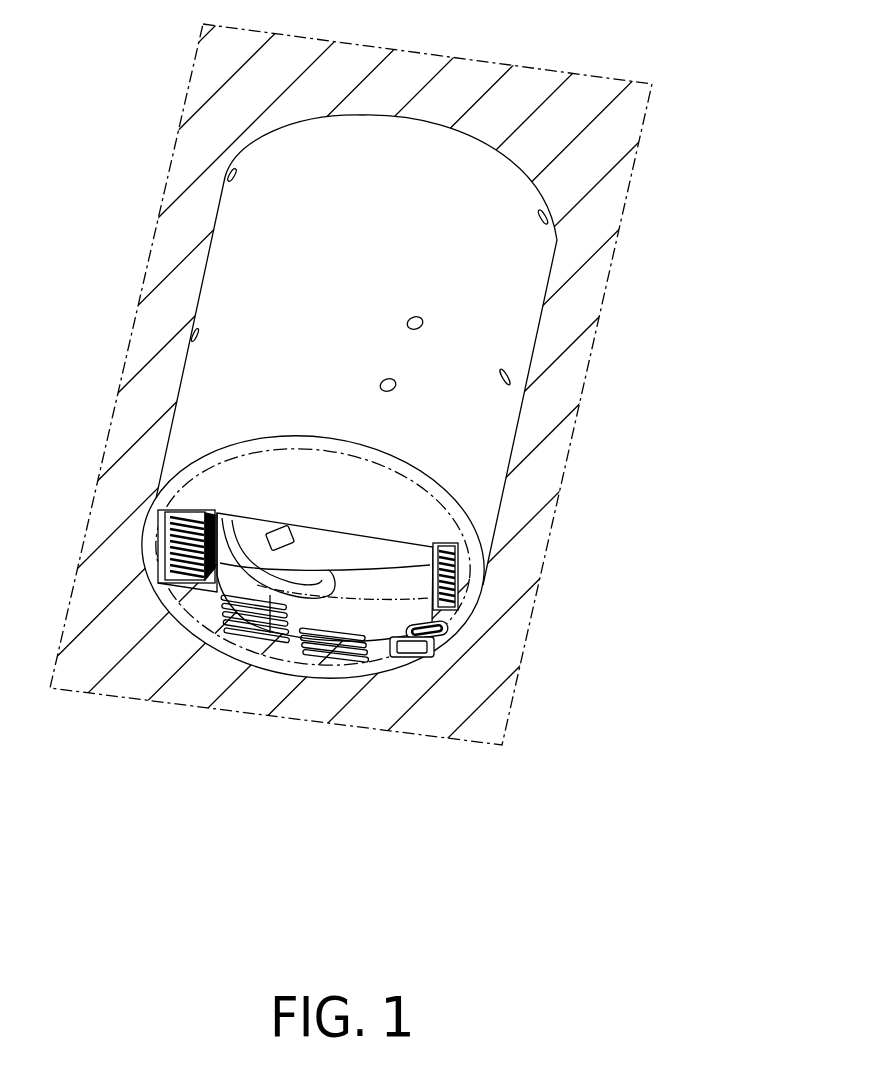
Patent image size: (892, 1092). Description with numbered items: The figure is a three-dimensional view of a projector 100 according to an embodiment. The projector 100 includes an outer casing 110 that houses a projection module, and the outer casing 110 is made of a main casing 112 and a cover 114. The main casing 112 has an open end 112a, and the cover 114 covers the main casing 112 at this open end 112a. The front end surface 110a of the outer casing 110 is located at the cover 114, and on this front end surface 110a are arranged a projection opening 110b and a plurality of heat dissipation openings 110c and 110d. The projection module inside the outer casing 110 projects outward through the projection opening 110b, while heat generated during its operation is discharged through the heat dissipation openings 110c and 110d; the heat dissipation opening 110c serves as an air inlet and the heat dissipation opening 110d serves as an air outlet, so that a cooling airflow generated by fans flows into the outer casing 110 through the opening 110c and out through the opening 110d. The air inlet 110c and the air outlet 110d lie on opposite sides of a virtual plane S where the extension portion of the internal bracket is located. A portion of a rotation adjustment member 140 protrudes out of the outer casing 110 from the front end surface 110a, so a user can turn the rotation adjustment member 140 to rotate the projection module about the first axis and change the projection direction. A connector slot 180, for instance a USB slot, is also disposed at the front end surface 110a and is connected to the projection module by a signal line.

The virtual plane S is at (483, 62).
The projector 100 is at (335, 496).
The outer casing 110 is at (335, 451).
The front end surface 110a is at (226, 475).
The projection opening 110b is at (348, 595).
The heat dissipation opening 110c is at (196, 575).
The heat dissipation opening 110d is at (251, 660).
The main casing 112 is at (329, 407).
The open end 112a is at (205, 454).
The cover 114 is at (299, 625).
The rotation adjustment member 140 is at (442, 640).
The connector slot 180 is at (416, 660).